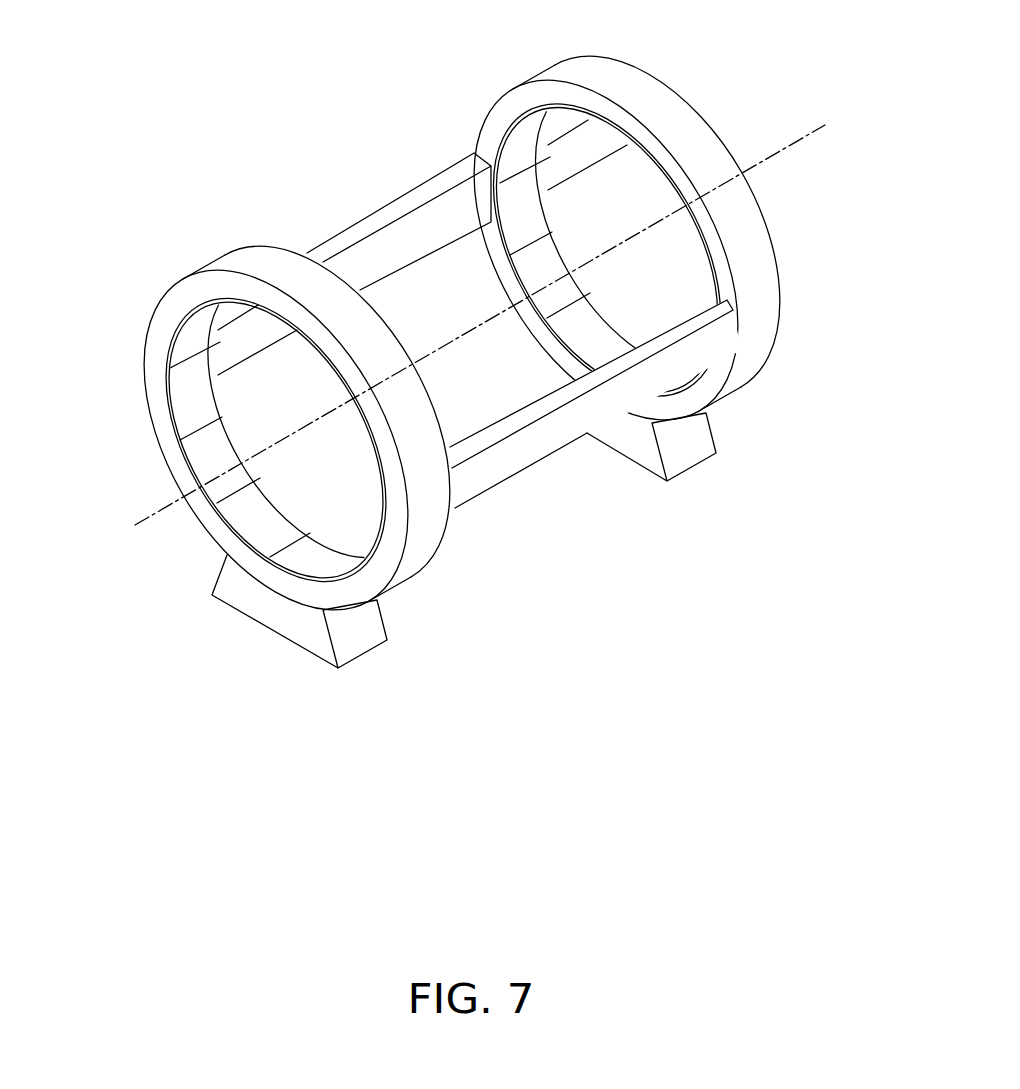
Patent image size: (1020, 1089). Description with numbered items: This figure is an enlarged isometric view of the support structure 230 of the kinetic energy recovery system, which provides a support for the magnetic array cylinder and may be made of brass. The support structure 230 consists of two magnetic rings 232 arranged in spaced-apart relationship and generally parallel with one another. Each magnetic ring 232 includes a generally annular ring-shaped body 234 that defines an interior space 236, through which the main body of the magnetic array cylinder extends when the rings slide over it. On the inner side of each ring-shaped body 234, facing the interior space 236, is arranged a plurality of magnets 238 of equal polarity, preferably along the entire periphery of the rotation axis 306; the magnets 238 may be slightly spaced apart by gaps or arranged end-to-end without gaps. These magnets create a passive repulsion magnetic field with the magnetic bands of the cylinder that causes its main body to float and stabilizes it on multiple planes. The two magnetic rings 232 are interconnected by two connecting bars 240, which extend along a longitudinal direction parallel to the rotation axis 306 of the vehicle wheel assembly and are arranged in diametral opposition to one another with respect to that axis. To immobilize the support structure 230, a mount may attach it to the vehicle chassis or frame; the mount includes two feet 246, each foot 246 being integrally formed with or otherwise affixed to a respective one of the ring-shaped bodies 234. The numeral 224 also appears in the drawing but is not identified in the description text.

The mounting base 224 is at (519, 536).
The support structure 230 is at (252, 108).
The magnetic ring 232 is at (464, 340).
The ring-shaped body 234 is at (274, 260).
The interior space 236 is at (252, 383).
The magnets 238 is at (200, 451).
The connecting bar 240 is at (380, 207).
The foot 246 is at (281, 607).
The rotation axis 306 is at (787, 150).